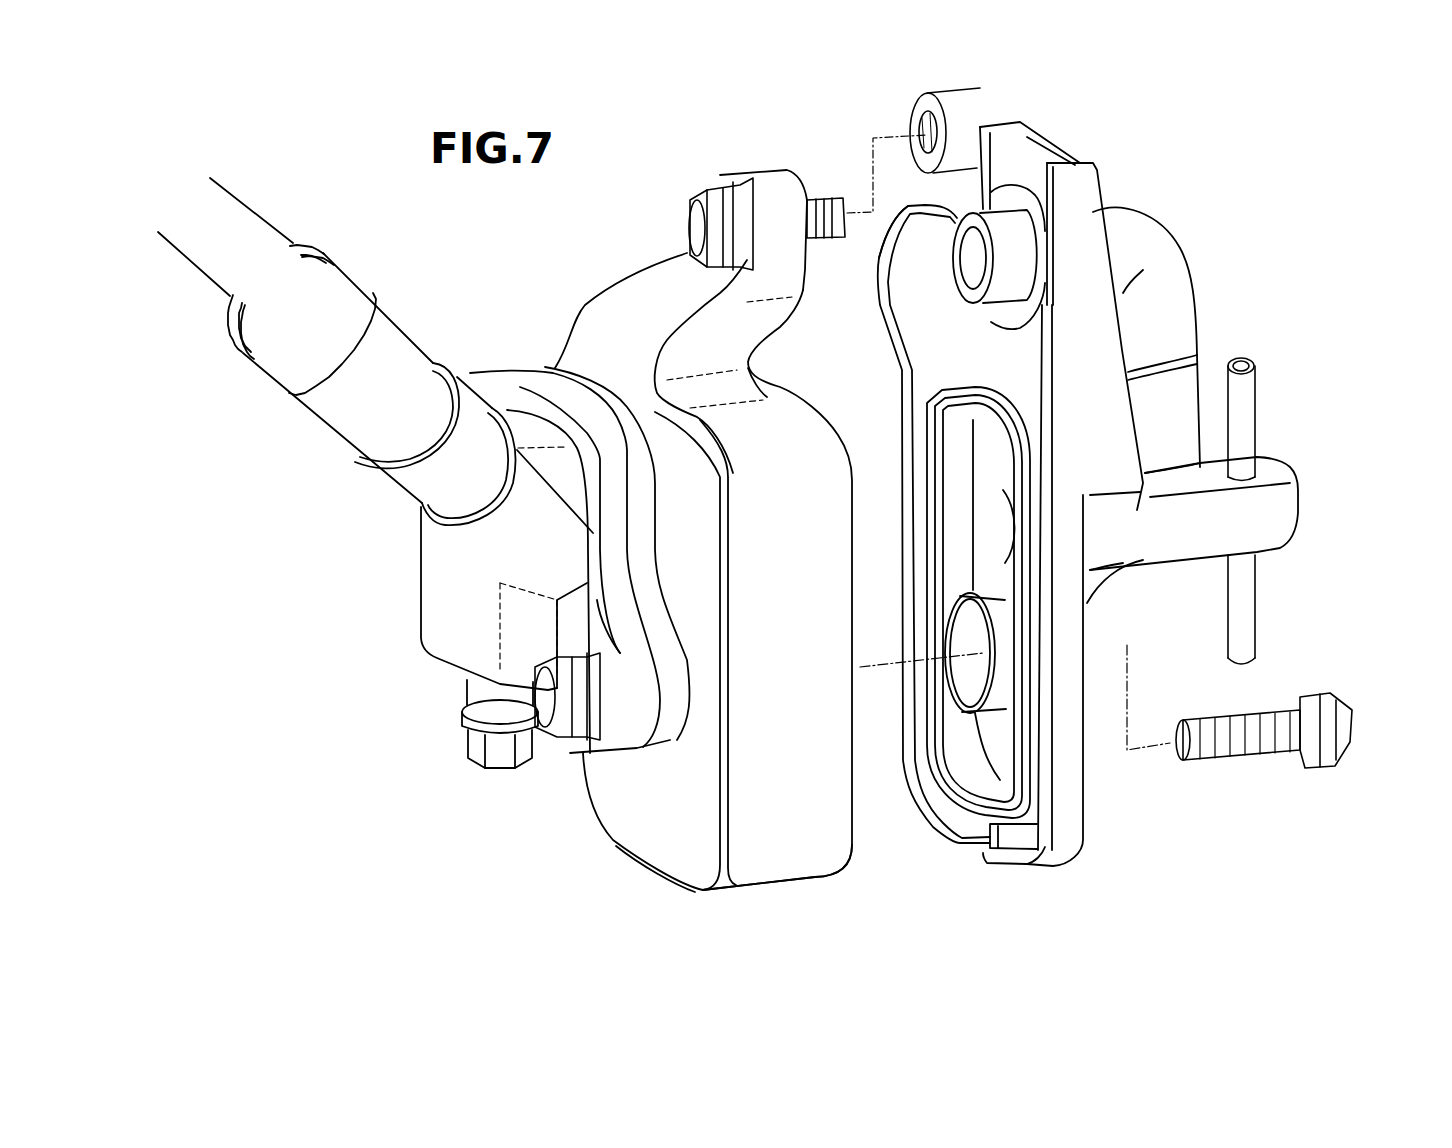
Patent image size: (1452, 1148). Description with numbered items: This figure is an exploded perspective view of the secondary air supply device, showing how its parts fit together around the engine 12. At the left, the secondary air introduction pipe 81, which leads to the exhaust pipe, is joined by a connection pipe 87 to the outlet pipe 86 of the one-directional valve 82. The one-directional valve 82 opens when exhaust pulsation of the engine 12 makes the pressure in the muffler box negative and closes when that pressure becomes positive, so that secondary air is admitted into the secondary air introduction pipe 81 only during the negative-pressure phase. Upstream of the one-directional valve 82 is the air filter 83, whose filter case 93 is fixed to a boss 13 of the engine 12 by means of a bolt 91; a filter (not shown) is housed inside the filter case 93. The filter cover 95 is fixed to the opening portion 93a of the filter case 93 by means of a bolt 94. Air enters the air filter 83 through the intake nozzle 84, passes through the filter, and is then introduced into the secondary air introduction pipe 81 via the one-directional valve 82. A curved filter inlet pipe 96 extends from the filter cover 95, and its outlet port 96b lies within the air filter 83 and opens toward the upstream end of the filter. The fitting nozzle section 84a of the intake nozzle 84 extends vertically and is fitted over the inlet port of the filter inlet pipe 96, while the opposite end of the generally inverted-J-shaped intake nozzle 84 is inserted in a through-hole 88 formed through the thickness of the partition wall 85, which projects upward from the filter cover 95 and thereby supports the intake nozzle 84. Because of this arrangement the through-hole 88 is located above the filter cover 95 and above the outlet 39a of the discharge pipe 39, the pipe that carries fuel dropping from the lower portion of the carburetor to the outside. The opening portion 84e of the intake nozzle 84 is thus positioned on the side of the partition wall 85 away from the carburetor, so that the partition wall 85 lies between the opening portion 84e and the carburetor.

The engine 12 is at (830, 127).
The boss 13 is at (990, 120).
The discharge pipe 39 is at (1247, 430).
The outlet 39a is at (1247, 633).
The secondary air introduction pipe 81 is at (237, 220).
The one-directional valve 82 is at (647, 530).
The air filter 83 is at (637, 833).
The intake nozzle 84 is at (1177, 287).
The fitting nozzle section 84a is at (1190, 400).
The opening portion 84e is at (970, 258).
The partition wall 85 is at (1083, 248).
The outlet pipe 86 is at (487, 550).
The connection pipe 87 is at (397, 350).
The through-hole 88 is at (1030, 277).
The bolt 91 is at (697, 225).
The filter case 93 is at (777, 867).
The opening portion 93a is at (852, 803).
The bolt 94 is at (1340, 723).
The filter cover 95 is at (1070, 797).
The filter inlet pipe 96 is at (1113, 573).
The outlet port 96b is at (1007, 530).